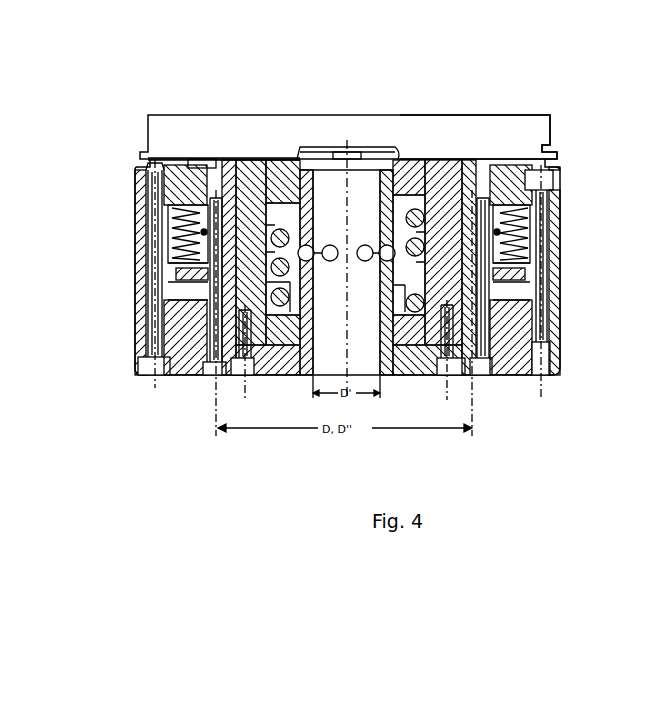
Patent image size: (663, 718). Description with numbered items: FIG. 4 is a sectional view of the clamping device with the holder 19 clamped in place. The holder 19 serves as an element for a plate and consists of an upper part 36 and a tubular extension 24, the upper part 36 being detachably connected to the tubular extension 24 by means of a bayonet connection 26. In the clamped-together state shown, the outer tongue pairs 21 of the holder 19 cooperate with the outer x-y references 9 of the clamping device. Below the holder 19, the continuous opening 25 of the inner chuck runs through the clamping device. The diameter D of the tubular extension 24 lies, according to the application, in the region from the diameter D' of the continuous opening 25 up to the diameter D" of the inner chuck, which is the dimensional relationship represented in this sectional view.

The outer x-y references 9 is at (343, 150).
The holder 19 is at (463, 135).
The outer tongue pairs 21 is at (383, 155).
The tubular extension 24 is at (222, 158).
The continuous opening 25 is at (328, 208).
The bayonet connection 26 is at (200, 157).
The upper part 36 is at (178, 128).